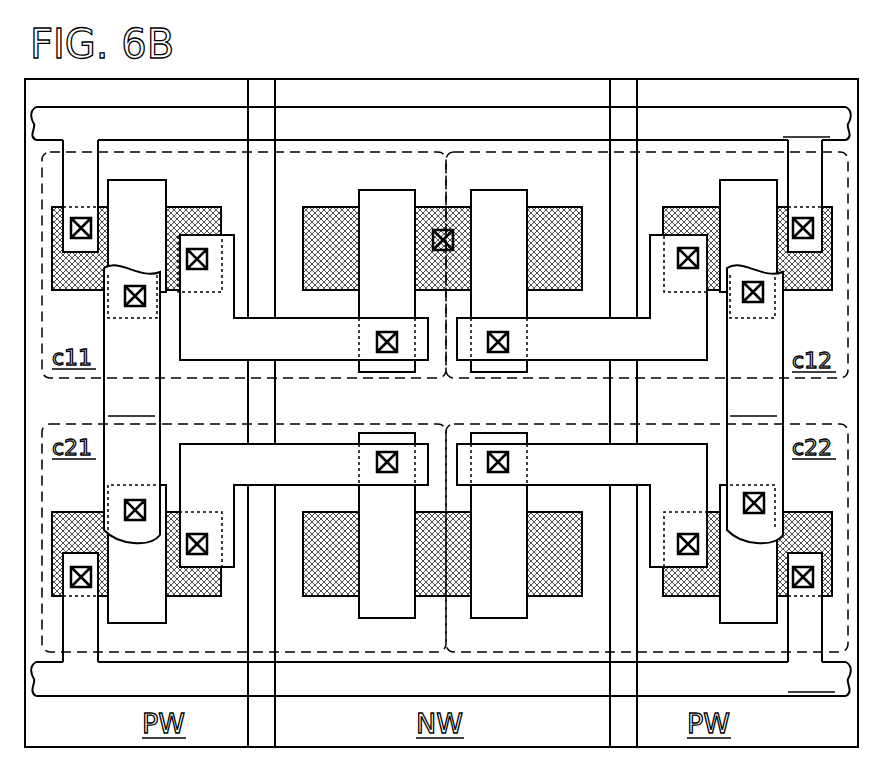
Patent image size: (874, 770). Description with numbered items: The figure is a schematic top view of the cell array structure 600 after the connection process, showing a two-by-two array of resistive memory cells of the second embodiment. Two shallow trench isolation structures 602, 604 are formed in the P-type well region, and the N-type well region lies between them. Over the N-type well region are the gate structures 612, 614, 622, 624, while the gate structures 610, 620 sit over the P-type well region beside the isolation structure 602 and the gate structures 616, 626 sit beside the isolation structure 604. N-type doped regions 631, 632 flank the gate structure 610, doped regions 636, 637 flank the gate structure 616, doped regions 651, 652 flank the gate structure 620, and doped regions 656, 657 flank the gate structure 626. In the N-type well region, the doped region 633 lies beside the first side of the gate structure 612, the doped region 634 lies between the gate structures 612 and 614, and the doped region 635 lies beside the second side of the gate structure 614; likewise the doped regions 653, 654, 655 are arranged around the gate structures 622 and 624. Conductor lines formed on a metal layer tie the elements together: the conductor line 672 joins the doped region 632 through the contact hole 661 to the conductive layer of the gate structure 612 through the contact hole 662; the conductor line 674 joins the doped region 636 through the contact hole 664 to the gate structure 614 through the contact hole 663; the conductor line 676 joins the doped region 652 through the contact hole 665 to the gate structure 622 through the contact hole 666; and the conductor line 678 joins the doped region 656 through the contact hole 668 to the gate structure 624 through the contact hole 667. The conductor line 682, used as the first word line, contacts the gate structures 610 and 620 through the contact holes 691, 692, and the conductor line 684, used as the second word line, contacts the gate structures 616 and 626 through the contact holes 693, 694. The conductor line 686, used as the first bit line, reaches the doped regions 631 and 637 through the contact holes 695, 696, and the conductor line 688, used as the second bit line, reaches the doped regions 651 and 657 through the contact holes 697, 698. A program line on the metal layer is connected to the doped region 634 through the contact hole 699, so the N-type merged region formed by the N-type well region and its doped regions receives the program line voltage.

The cell array structure 600 is at (464, 54).
The isolation structure 602 is at (262, 79).
The isolation structure 604 is at (624, 79).
The gate structure 610 is at (158, 232).
The gate structure 612 is at (407, 232).
The gate structure 614 is at (520, 232).
The gate structure 616 is at (770, 232).
The gate structure 620 is at (158, 591).
The gate structure 622 is at (408, 571).
The gate structure 624 is at (520, 571).
The gate structure 626 is at (770, 582).
The doped region 631 is at (73, 290).
The doped region 632 is at (196, 207).
The doped region 633 is at (320, 213).
The doped region 634 is at (428, 210).
The doped region 635 is at (553, 291).
The doped region 636 is at (686, 213).
The doped region 637 is at (800, 291).
The doped region 651 is at (80, 513).
The doped region 652 is at (193, 596).
The doped region 653 is at (330, 596).
The doped region 654 is at (430, 596).
The doped region 655 is at (565, 596).
The doped region 656 is at (684, 596).
The doped region 657 is at (815, 513).
The contact hole 661 is at (203, 270).
The contact hole 662 is at (376, 342).
The contact hole 663 is at (509, 342).
The contact hole 664 is at (689, 269).
The contact hole 665 is at (198, 533).
The contact hole 666 is at (376, 462).
The contact hole 667 is at (509, 462).
The contact hole 668 is at (688, 533).
The conductor line 672 is at (261, 354).
The conductor line 674 is at (646, 354).
The conductor line 676 is at (281, 479).
The conductor line 678 is at (646, 479).
The conductor line 682 is at (157, 400).
The conductor line 684 is at (726, 403).
The conductor line 686 is at (430, 108).
The conductor line 688 is at (583, 697).
The contact hole 691 is at (135, 307).
The contact hole 692 is at (135, 499).
The contact hole 693 is at (753, 303).
The contact hole 694 is at (754, 492).
The contact hole 695 is at (88, 216).
The contact hole 696 is at (798, 216).
The contact hole 697 is at (85, 588).
The contact hole 698 is at (800, 588).
The contact hole 699 is at (448, 230).